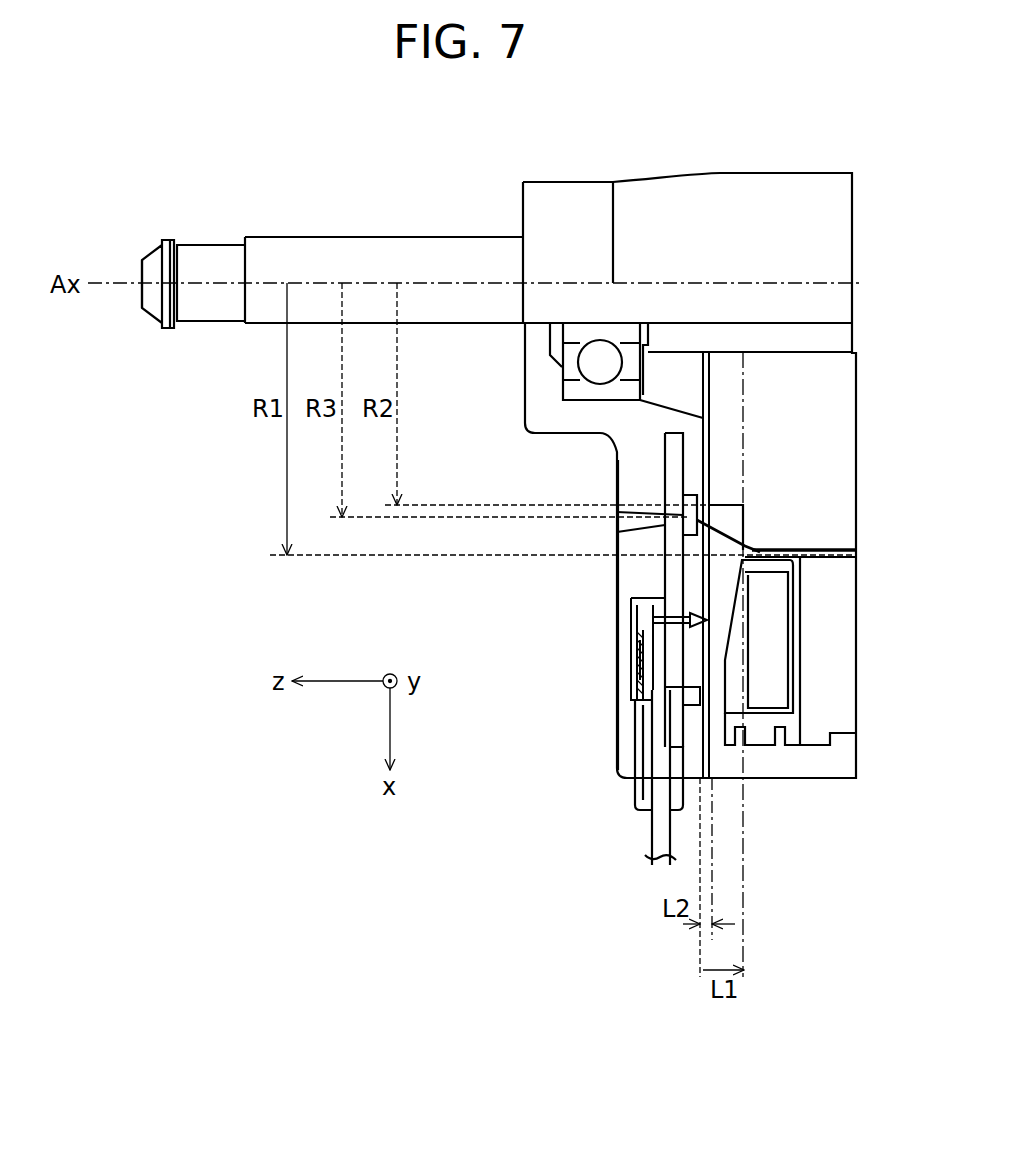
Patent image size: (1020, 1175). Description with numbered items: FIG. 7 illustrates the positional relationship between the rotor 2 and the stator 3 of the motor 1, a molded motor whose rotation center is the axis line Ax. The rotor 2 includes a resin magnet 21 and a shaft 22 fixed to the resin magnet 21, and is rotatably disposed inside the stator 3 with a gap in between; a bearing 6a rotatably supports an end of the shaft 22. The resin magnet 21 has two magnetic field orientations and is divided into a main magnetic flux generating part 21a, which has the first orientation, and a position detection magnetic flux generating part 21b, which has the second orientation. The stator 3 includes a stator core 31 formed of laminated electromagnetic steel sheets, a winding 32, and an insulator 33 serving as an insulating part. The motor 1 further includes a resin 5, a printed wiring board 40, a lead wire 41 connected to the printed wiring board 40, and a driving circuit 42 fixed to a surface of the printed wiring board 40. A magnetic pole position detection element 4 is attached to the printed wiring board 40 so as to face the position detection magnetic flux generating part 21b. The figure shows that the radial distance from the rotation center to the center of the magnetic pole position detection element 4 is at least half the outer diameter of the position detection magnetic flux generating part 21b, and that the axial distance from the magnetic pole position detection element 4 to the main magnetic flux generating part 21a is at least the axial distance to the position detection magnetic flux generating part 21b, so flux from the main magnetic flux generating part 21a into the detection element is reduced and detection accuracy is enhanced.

The motor 1 is at (200, 188).
The rotor 2 is at (838, 488).
The stator 3 is at (881, 828).
The magnetic pole position detection element 4 is at (742, 521).
The resin 5 is at (632, 583).
The bearing 6a is at (588, 383).
The resin magnet 21 is at (806, 404).
The main magnetic flux generating part 21a is at (765, 518).
The position detection magnetic flux generating part 21b is at (742, 418).
The shaft 22 is at (372, 262).
The stator core 31 is at (832, 718).
The winding 32 is at (760, 718).
The insulator 33 is at (778, 718).
The printed wiring board 40 is at (670, 465).
The lead wire 41 is at (662, 843).
The driving circuit 42 is at (636, 666).